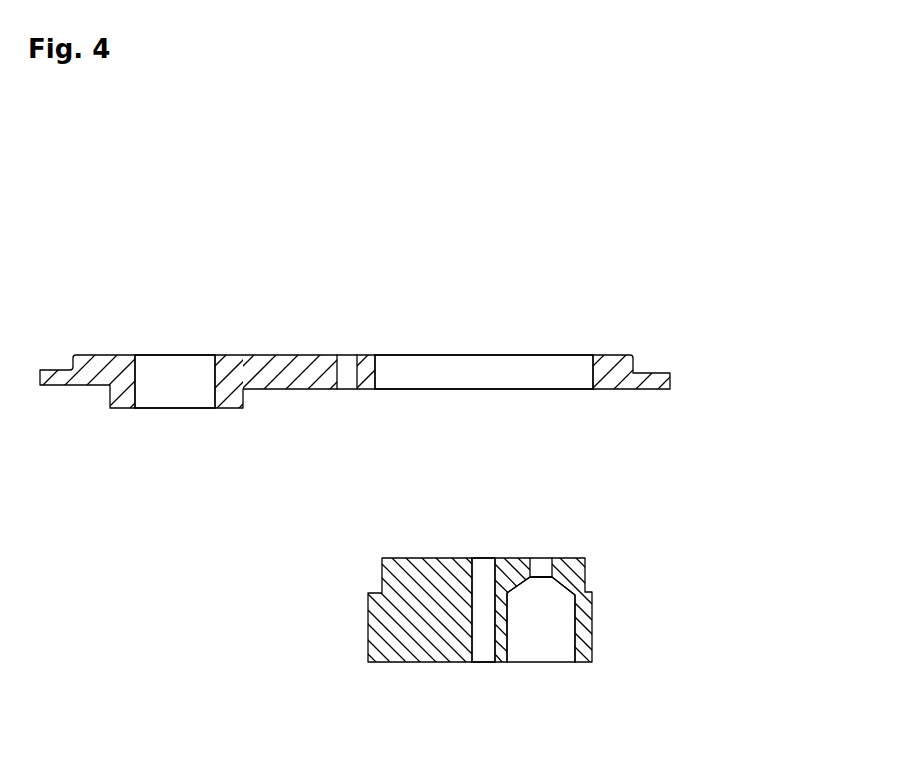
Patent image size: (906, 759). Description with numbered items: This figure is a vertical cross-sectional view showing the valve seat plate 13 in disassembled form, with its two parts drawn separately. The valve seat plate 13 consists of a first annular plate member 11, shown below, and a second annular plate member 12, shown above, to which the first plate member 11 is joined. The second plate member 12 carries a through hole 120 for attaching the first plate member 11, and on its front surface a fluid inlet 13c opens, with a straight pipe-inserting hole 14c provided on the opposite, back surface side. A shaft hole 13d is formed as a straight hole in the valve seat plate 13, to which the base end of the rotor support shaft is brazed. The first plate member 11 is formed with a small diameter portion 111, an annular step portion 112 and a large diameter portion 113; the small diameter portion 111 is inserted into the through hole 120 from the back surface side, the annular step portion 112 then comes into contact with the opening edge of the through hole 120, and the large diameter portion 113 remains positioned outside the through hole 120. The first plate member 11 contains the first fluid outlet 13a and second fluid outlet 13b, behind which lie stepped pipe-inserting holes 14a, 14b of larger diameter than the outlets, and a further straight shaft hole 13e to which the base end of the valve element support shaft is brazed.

The first annular plate member 11 is at (595, 613).
The second annular plate member 12 is at (650, 380).
The valve seat plate 13 is at (745, 275).
The first fluid outlet 13a is at (605, 529).
The second fluid outlet 13b is at (540, 573).
The fluid inlet 13c is at (122, 353).
The shaft hole 13d is at (370, 355).
The shaft hole 13e is at (472, 627).
The pipe-inserting hole 14a is at (616, 652).
The pipe-inserting hole 14b is at (542, 653).
The pipe-inserting hole 14c is at (175, 390).
The small diameter portion 111 is at (360, 566).
The annular step portion 112 is at (360, 588).
The large diameter portion 113 is at (367, 628).
The through hole 120 is at (517, 360).